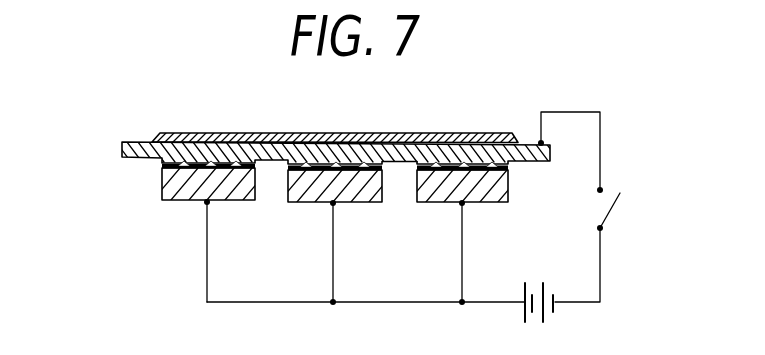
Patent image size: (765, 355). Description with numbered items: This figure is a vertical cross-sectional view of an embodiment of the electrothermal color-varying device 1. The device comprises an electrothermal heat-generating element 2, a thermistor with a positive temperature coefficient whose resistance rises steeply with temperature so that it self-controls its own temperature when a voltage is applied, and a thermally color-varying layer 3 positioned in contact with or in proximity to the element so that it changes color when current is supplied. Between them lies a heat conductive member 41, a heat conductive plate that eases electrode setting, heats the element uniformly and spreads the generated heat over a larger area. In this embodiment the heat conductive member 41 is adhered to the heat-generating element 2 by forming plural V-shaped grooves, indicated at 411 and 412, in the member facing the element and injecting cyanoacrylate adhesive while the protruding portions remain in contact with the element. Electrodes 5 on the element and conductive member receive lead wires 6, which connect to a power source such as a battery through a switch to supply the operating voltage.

The electrothermal color-varying device 1 is at (438, 131).
The electrothermal heat-generating element 2 is at (168, 188).
The thermally color-varying layer 3 is at (218, 133).
The heat conductive member 41 is at (133, 144).
The conductive contact portion 411 is at (348, 166).
The insulating matrix portion 412 is at (339, 166).
The electrodes 5 is at (539, 141).
The lead wires 6 is at (293, 303).